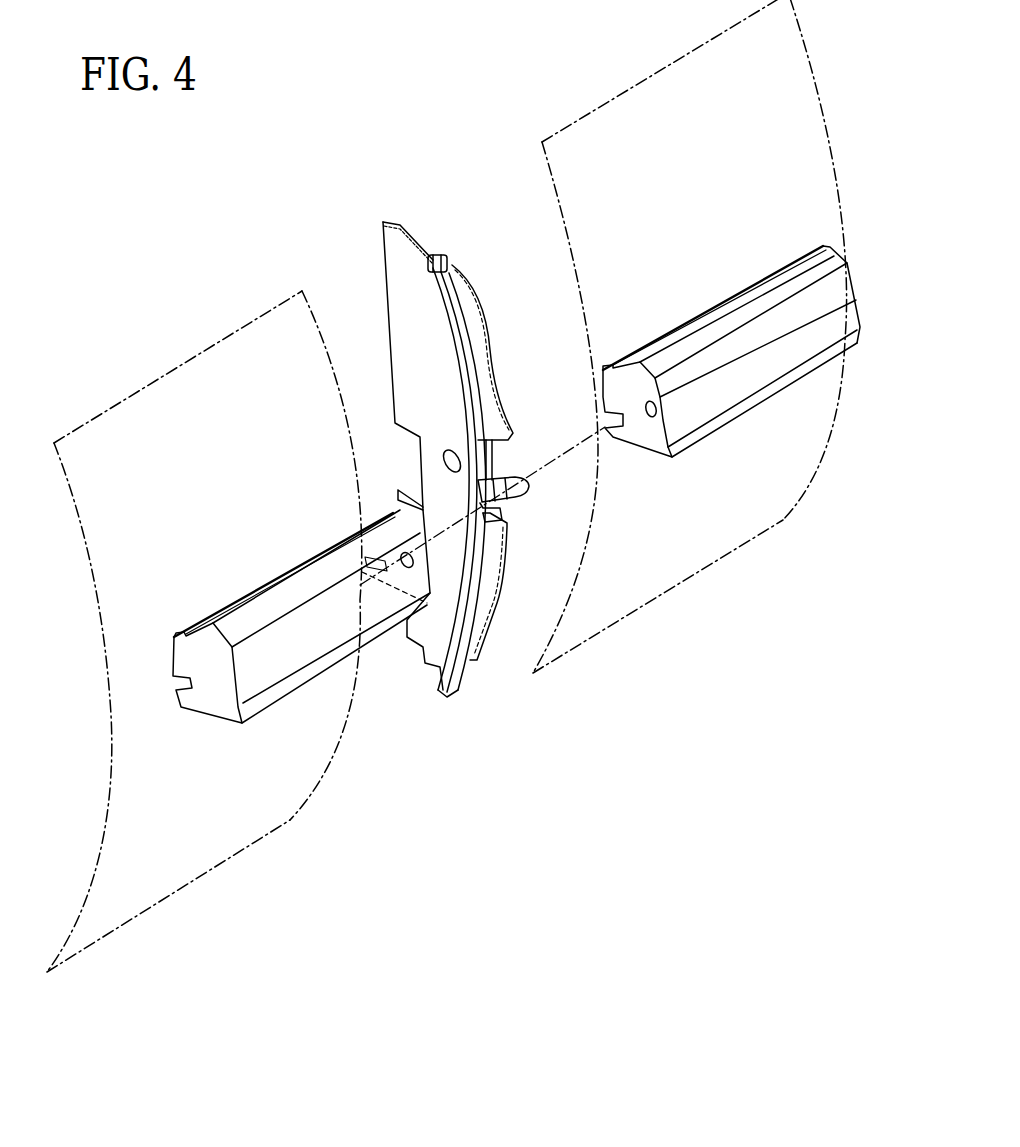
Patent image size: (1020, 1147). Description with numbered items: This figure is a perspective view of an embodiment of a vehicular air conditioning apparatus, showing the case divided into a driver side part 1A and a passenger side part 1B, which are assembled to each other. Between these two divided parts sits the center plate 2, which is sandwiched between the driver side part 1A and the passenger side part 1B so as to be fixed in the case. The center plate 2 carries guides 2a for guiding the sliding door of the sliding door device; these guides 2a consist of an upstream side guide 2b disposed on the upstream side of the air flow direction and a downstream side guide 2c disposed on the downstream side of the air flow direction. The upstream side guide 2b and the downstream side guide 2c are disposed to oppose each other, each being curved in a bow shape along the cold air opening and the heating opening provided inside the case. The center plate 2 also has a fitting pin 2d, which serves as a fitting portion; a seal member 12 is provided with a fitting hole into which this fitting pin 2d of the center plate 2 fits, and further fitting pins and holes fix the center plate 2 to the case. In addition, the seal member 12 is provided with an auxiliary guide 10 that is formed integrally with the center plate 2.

The driver side part 1A is at (240, 832).
The passenger side part 1B is at (673, 555).
The center plate 2 is at (393, 277).
The guide 2a is at (471, 428).
The upstream side guide 2b is at (428, 267).
The downstream side guide 2c is at (468, 280).
The fitting pin 2d is at (515, 483).
The auxiliary guide 10 is at (493, 481).
The seal member 12 is at (373, 617).